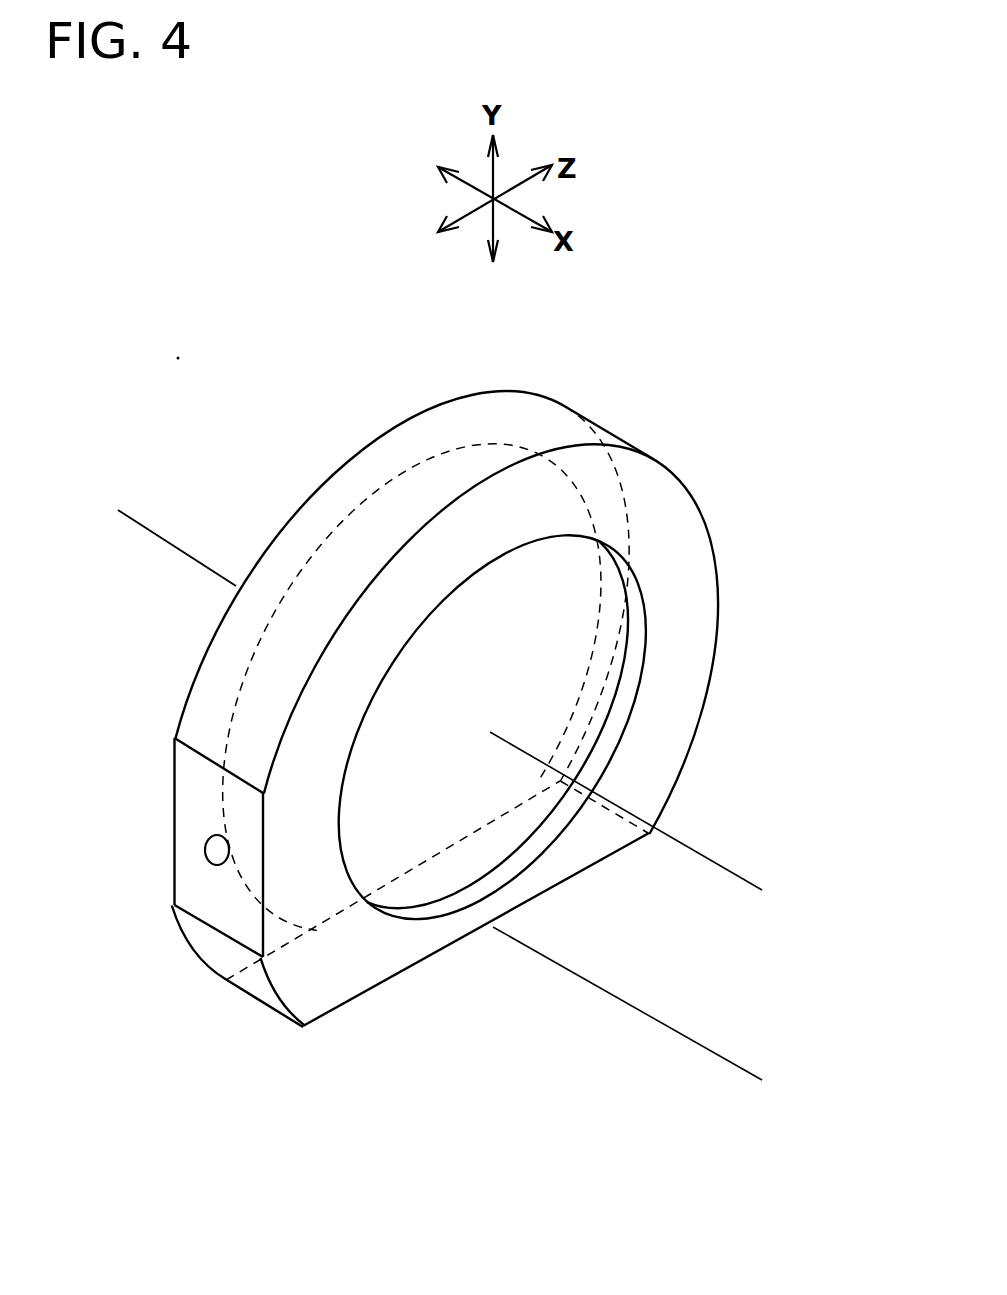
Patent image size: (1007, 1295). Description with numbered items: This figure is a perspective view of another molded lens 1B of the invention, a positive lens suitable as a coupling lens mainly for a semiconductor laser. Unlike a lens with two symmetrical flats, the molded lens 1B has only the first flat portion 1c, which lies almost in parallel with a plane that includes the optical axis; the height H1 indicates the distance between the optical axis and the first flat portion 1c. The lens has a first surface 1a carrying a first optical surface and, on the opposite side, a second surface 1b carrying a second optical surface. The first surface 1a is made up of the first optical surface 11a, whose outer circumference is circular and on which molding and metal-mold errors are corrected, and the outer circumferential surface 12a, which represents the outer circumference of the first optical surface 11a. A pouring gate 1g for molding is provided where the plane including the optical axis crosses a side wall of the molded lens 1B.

The molded lens 1B is at (633, 388).
The second surface 1b is at (164, 668).
The pouring gate 1g is at (205, 849).
The first flat portion 1c is at (437, 955).
The first surface 1a is at (402, 1090).
The first optical surface 11a is at (388, 845).
The outer circumferential surface 12a is at (310, 960).
The height H1 is at (736, 878).